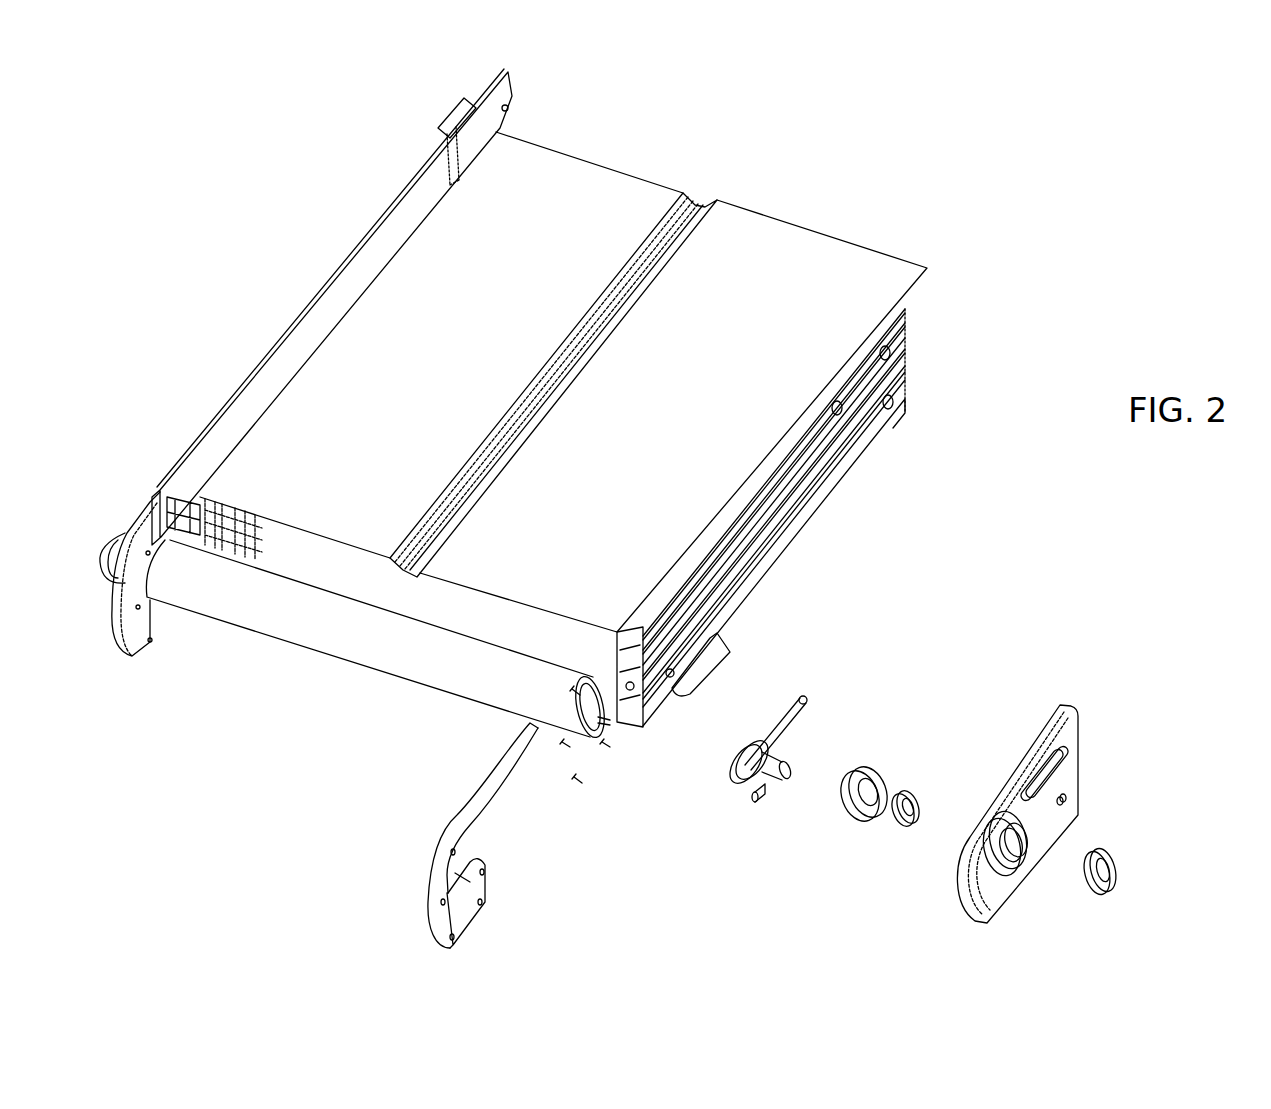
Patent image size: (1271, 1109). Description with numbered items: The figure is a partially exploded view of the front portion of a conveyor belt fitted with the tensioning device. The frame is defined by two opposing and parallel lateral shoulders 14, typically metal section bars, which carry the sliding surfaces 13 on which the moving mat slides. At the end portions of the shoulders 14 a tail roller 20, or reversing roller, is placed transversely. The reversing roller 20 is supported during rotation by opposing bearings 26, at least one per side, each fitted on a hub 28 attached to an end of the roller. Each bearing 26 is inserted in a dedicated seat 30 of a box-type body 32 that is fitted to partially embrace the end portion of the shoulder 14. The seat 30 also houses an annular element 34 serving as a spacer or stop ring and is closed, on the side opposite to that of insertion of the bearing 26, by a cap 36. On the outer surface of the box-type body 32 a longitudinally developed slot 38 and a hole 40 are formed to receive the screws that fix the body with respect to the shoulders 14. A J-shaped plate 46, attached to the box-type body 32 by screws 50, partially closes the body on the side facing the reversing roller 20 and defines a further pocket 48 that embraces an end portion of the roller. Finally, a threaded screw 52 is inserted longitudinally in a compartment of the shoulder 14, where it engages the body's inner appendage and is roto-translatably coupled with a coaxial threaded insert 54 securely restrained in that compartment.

The sliding surfaces 13 is at (787, 288).
The lateral shoulders 14 is at (798, 528).
The tail roller 20 is at (293, 618).
The bearings 26 is at (868, 770).
The hub 28 is at (738, 768).
The seat 30 is at (1012, 850).
The box-type body 32 is at (1082, 697).
The annular element 34 is at (905, 830).
The cap 36 is at (1112, 852).
The slot 38 is at (1055, 767).
The hole 40 is at (1068, 800).
The plate 46 is at (447, 918).
The pocket 48 is at (455, 873).
The screws 50 is at (607, 750).
The threaded screw 52 is at (787, 727).
The threaded insert 54 is at (762, 800).